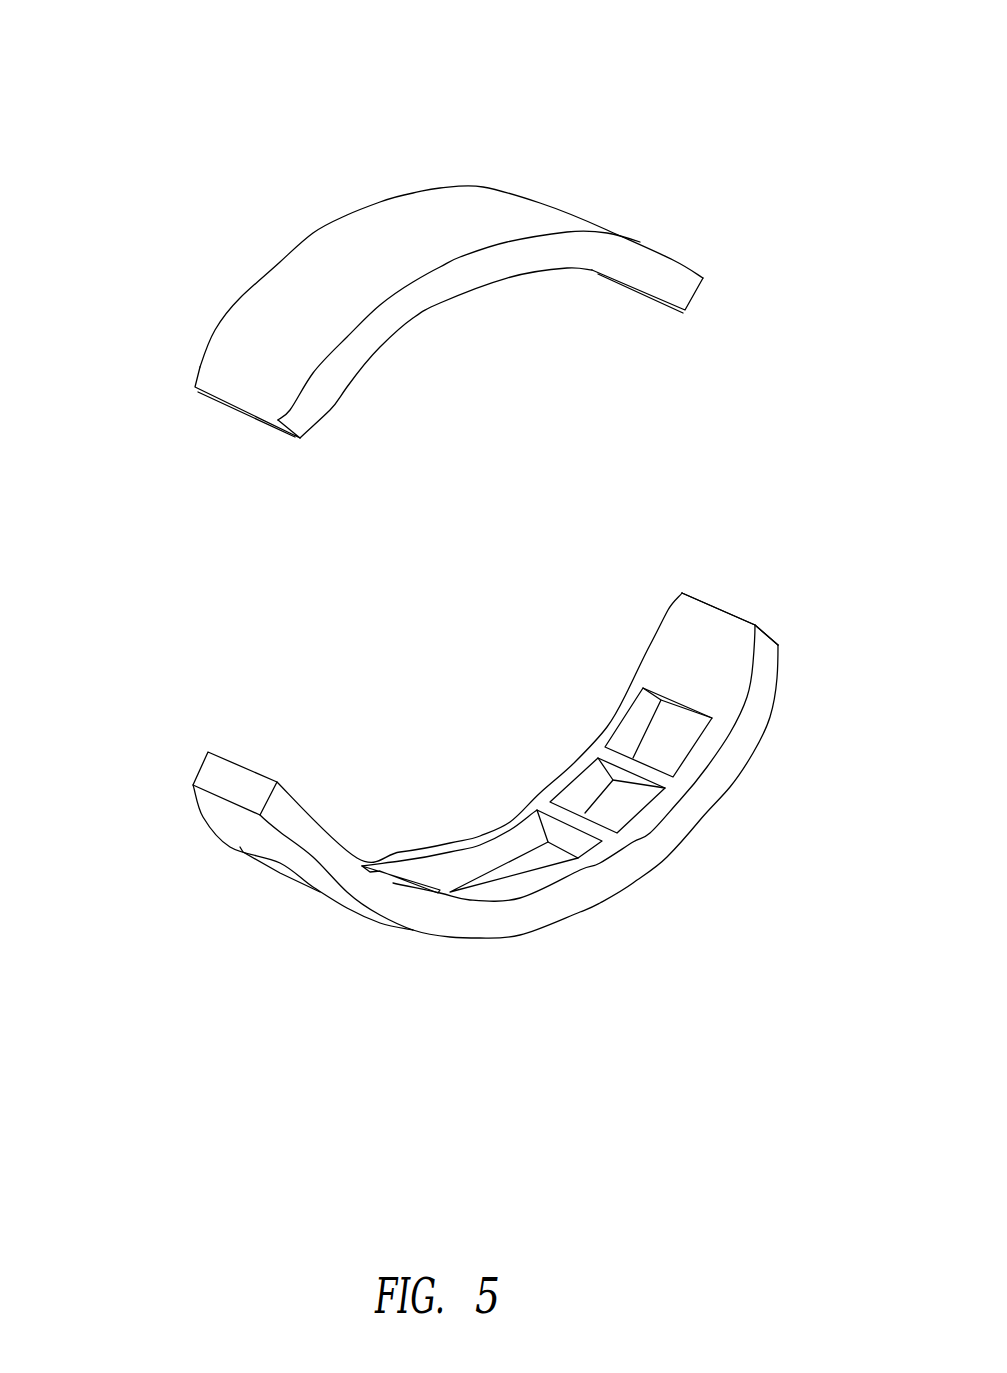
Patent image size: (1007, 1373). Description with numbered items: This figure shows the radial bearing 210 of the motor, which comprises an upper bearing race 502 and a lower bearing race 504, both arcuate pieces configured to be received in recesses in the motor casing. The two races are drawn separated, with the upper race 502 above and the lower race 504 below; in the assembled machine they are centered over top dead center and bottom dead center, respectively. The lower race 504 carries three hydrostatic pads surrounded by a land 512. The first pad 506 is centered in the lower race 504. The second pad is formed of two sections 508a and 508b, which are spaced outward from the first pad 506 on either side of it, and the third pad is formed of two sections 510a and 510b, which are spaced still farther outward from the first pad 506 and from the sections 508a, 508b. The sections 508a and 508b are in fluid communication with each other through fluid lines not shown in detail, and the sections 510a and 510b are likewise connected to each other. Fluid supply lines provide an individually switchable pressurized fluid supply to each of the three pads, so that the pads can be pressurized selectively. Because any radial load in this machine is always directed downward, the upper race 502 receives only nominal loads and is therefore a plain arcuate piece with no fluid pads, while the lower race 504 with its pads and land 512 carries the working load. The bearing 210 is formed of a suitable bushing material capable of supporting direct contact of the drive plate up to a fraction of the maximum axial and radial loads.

The radial bearing 210 is at (233, 75).
The upper bearing race 502 is at (277, 292).
The lower bearing race 504 is at (217, 812).
The first hydrostatic pad 506 is at (478, 862).
The section of second hydrostatic pad 508a is at (583, 790).
The section of second hydrostatic pad 508b is at (383, 873).
The section of third hydrostatic pad 510a is at (632, 732).
The section of third hydrostatic pad 510b is at (288, 873).
The land 512 is at (723, 668).